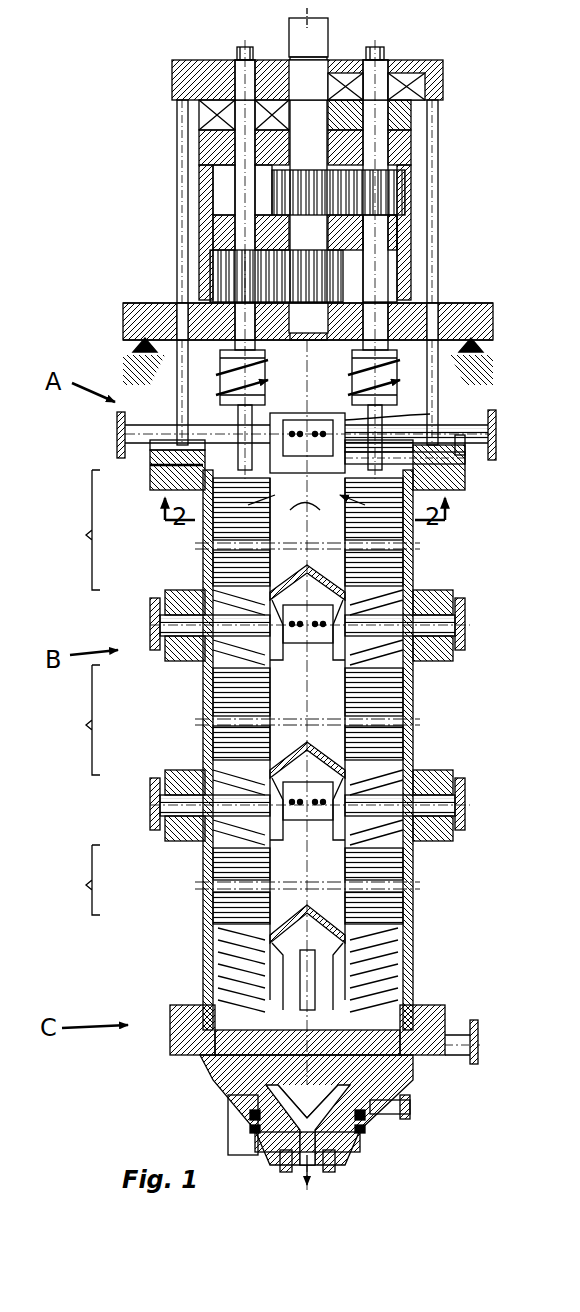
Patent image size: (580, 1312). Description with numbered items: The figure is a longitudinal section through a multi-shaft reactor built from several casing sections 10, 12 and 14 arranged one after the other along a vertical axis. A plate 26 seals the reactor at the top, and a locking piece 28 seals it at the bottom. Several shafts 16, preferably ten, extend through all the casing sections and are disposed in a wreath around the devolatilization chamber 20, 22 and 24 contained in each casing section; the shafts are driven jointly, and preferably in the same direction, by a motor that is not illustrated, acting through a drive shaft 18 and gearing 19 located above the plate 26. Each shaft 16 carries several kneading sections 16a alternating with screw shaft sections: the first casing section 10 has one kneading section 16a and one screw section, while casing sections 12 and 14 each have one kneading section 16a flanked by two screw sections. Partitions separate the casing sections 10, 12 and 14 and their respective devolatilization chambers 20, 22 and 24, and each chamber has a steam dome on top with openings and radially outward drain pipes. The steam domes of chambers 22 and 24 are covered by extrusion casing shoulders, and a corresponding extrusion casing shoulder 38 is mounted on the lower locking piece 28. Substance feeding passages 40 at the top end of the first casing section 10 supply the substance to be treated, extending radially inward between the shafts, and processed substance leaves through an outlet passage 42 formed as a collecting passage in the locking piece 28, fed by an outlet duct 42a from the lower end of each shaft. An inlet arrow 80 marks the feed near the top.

The casing section 10 is at (420, 556).
The casing section 12 is at (420, 795).
The casing section 14 is at (430, 975).
The shaft 16 is at (205, 490).
The kneading section 16a is at (575, 640).
The drive shaft 18 is at (318, 38).
The gearing 19 is at (447, 212).
The devolatilization chamber 20 is at (230, 548).
The devolatilization chamber 22 is at (240, 690).
The devolatilization chamber 24 is at (250, 874).
The plate 26 is at (435, 482).
The locking piece 28 is at (200, 1066).
The extrusion casing shoulder 38 is at (215, 905).
The substance feeding passage 40 is at (465, 460).
The outlet passage 42 is at (345, 1170).
The outlet duct 42a is at (258, 1120).
The inlet 80 is at (128, 463).